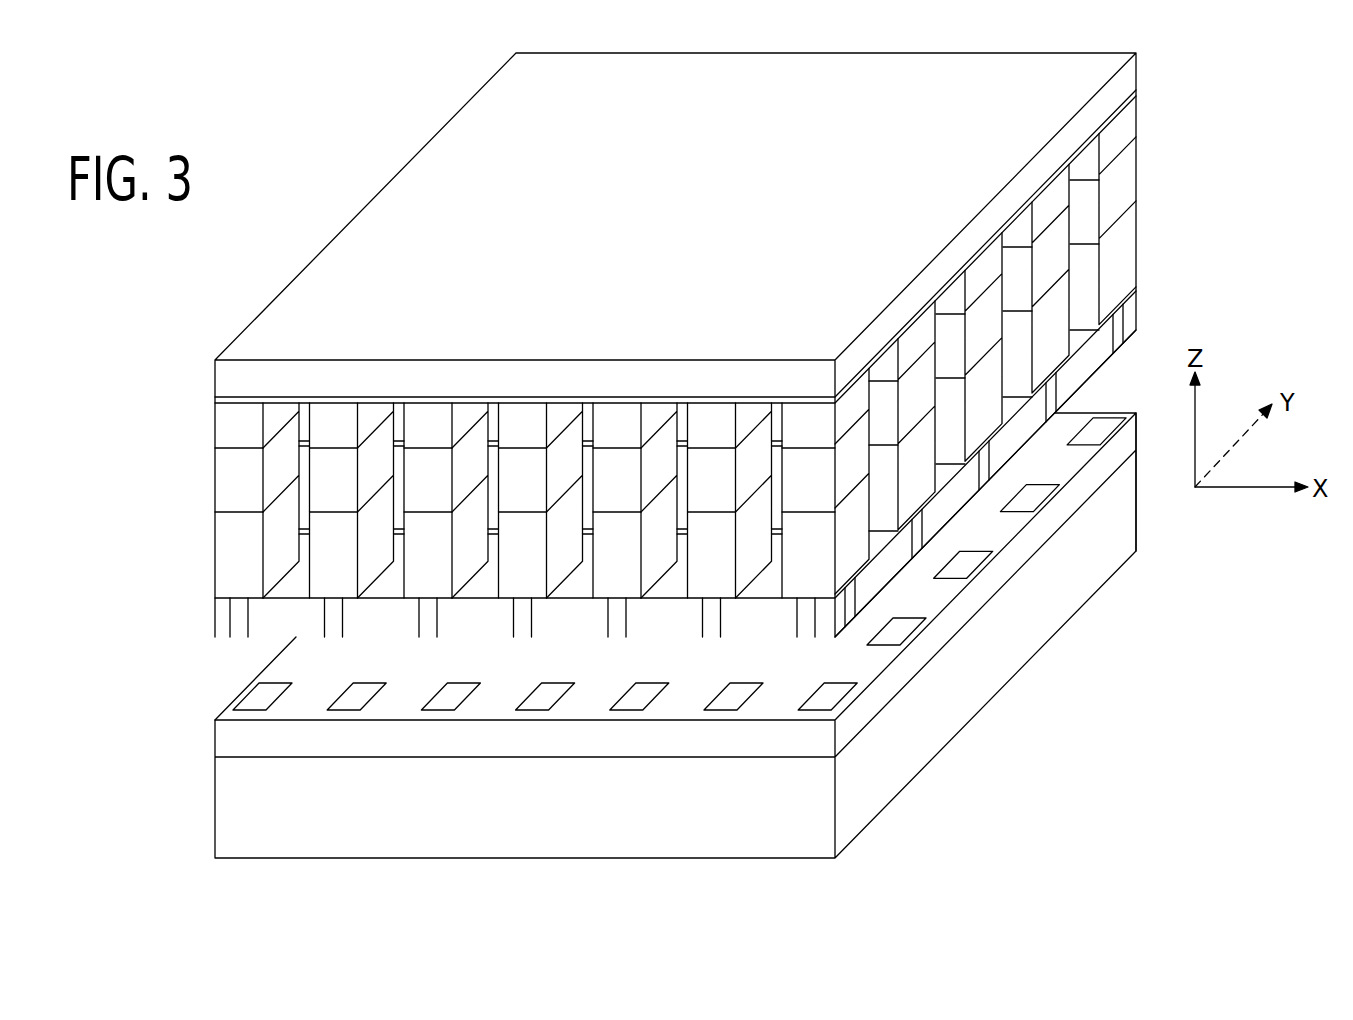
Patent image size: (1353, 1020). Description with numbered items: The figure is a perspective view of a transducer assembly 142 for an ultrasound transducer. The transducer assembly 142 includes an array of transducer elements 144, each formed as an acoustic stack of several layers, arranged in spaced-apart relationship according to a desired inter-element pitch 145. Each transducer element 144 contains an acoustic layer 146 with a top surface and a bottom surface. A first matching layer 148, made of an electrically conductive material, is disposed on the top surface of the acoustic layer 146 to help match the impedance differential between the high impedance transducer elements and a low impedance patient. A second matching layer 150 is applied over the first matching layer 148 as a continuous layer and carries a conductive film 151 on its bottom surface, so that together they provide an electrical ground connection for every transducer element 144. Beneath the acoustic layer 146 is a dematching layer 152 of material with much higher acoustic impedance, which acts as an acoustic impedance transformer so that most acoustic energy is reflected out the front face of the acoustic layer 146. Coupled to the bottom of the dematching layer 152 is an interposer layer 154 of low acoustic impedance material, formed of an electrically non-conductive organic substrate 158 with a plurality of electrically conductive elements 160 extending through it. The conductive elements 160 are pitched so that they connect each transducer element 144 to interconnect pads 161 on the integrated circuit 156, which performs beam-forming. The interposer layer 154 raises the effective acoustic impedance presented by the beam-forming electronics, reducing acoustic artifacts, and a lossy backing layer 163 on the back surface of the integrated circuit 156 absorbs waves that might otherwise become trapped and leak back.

The transducer assembly 142 is at (280, 67).
The transducer elements 144 is at (1120, 203).
The pitch 145 is at (1015, 405).
The acoustic layer 146 is at (237, 477).
The first matching layer 148 is at (237, 428).
The second matching layer 150 is at (233, 372).
The conductive film 151 is at (217, 400).
The dematching layer 152 is at (235, 550).
The interposer layer 154 is at (222, 617).
The integrated circuit 156 is at (287, 758).
The organic substrate 158 is at (258, 640).
The electrically conductive elements 160 is at (808, 632).
The interconnect pads 161 is at (830, 697).
The lossy backing layer 163 is at (1046, 650).